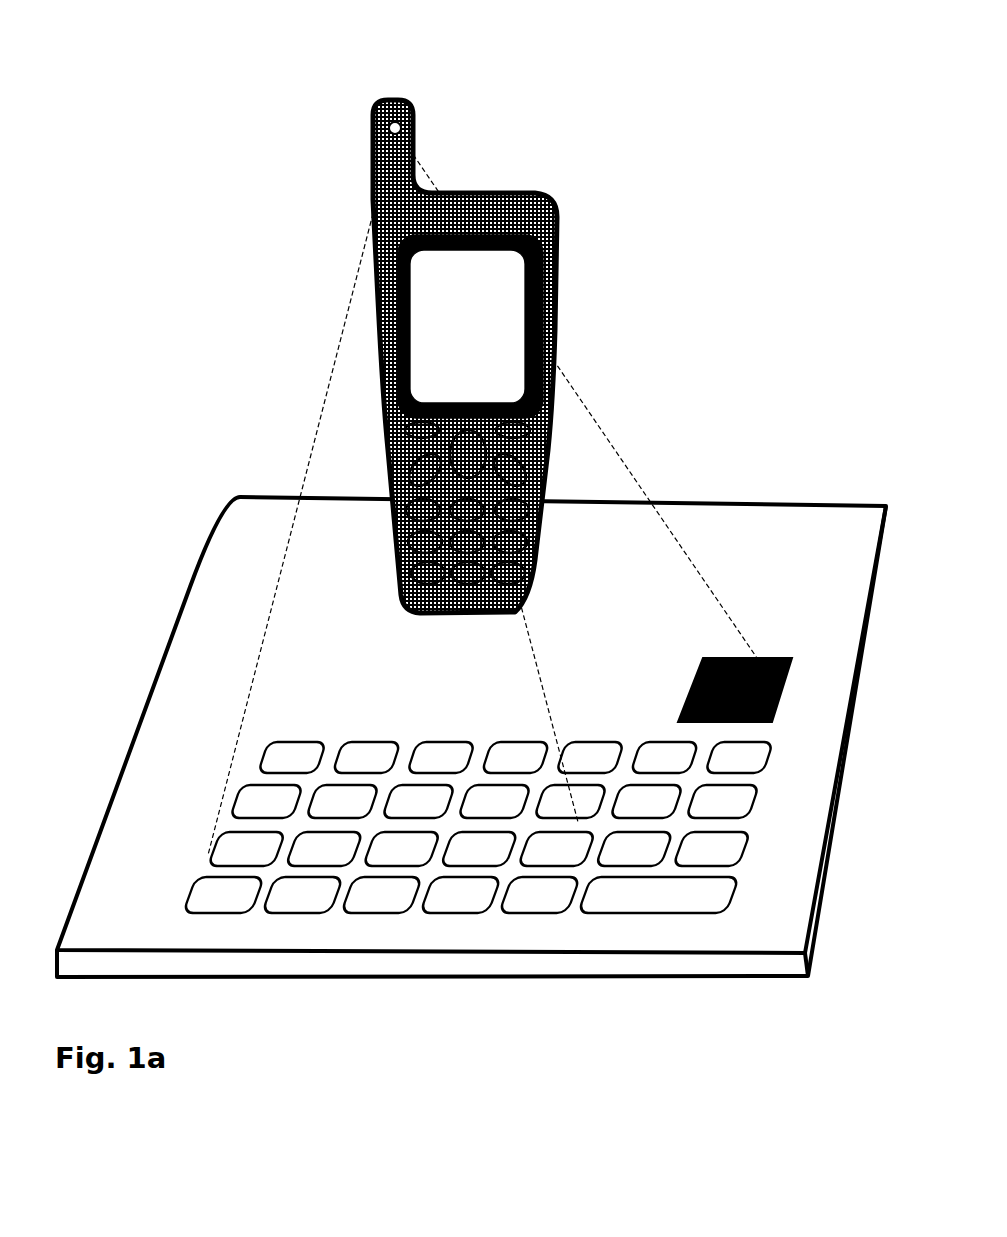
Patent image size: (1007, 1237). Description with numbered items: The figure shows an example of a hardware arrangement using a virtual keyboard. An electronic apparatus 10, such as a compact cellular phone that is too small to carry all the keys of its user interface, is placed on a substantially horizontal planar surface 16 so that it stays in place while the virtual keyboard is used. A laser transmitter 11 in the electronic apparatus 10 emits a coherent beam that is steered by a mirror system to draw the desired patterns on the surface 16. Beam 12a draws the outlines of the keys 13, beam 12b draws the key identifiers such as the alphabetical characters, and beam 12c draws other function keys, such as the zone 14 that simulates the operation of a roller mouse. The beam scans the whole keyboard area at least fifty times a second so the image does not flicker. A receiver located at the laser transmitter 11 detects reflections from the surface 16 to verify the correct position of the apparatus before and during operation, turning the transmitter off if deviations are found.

The electronic apparatus 10 is at (557, 213).
The laser transmitter 11 is at (413, 107).
The beam 12a is at (302, 468).
The beam 12b is at (540, 697).
The beam 12c is at (636, 470).
The keys 13 is at (328, 742).
The zone 14 is at (770, 658).
The planar surface 16 is at (752, 515).